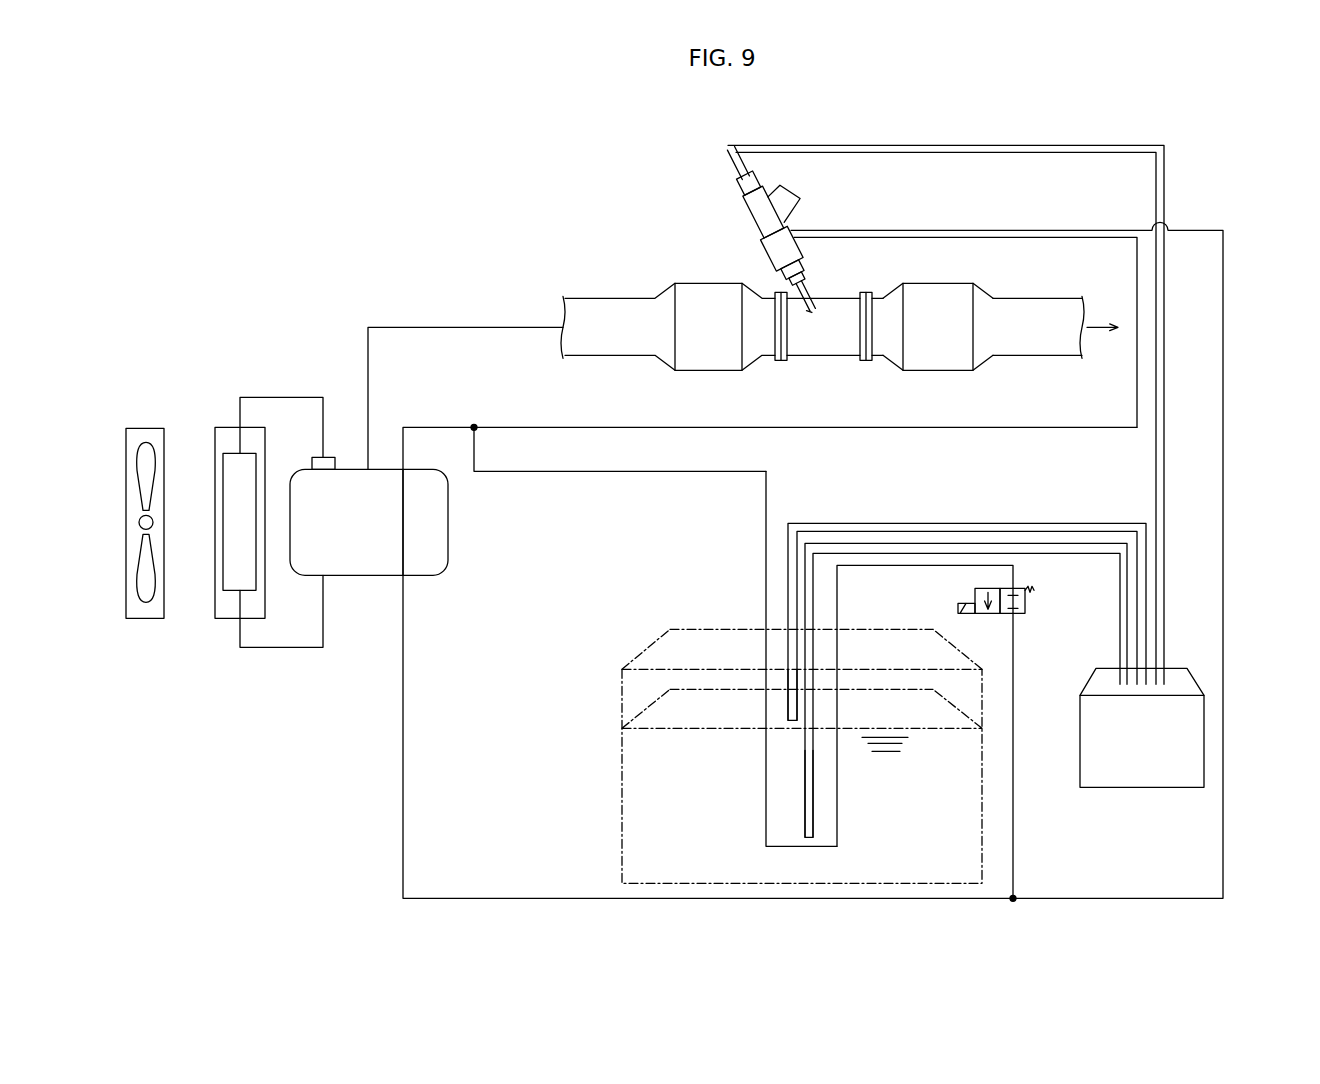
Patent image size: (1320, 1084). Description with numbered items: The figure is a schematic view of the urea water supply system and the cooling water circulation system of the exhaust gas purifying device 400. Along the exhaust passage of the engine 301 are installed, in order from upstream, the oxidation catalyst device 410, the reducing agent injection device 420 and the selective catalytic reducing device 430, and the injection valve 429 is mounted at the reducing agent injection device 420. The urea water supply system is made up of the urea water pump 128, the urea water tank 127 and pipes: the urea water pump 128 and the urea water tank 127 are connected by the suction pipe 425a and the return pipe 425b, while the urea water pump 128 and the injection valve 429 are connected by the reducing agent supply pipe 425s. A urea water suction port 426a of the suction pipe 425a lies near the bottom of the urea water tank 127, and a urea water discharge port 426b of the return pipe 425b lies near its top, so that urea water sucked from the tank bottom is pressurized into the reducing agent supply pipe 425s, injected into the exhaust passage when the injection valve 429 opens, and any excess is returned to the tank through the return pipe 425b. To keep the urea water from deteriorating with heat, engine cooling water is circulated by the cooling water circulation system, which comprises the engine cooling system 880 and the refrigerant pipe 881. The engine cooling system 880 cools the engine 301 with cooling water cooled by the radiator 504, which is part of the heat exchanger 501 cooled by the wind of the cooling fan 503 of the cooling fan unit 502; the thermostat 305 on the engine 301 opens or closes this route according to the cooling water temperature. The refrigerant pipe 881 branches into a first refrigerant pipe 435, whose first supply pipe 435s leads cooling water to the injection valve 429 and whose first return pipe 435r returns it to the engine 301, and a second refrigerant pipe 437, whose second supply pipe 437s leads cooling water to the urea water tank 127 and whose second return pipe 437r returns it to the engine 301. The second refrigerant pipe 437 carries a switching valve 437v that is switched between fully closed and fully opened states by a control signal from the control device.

The exhaust gas purifying device 400 is at (839, 312).
The oxidation catalyst device 410 is at (751, 356).
The reducing agent injection device 420 is at (835, 291).
The selective catalytic reducing device 430 is at (915, 360).
The injection valve 429 is at (739, 202).
The reducing agent supply pipe 425s is at (982, 145).
The suction pipe 425a is at (970, 541).
The return pipe 425b is at (1048, 522).
The urea water suction port 426a is at (810, 838).
The urea water discharge port 426b is at (790, 722).
The first refrigerant pipe 435 is at (813, 542).
The first return pipe 435r is at (1013, 229).
The first supply pipe 435s is at (988, 239).
The second refrigerant pipe 437 is at (570, 484).
The second supply pipe 437s is at (766, 588).
The second return pipe 437r is at (838, 589).
The switching valve 437v is at (1021, 614).
The refrigerant pipe 881 is at (455, 413).
The engine cooling system 880 is at (279, 664).
The engine 301 is at (343, 559).
The thermostat 305 is at (328, 456).
The heat exchanger 501 is at (220, 481).
The radiator 504 is at (225, 495).
The cooling fan unit 502 is at (111, 481).
The cooling fan 503 is at (140, 477).
The urea water tank 127 is at (982, 842).
The urea water pump 128 is at (1185, 737).